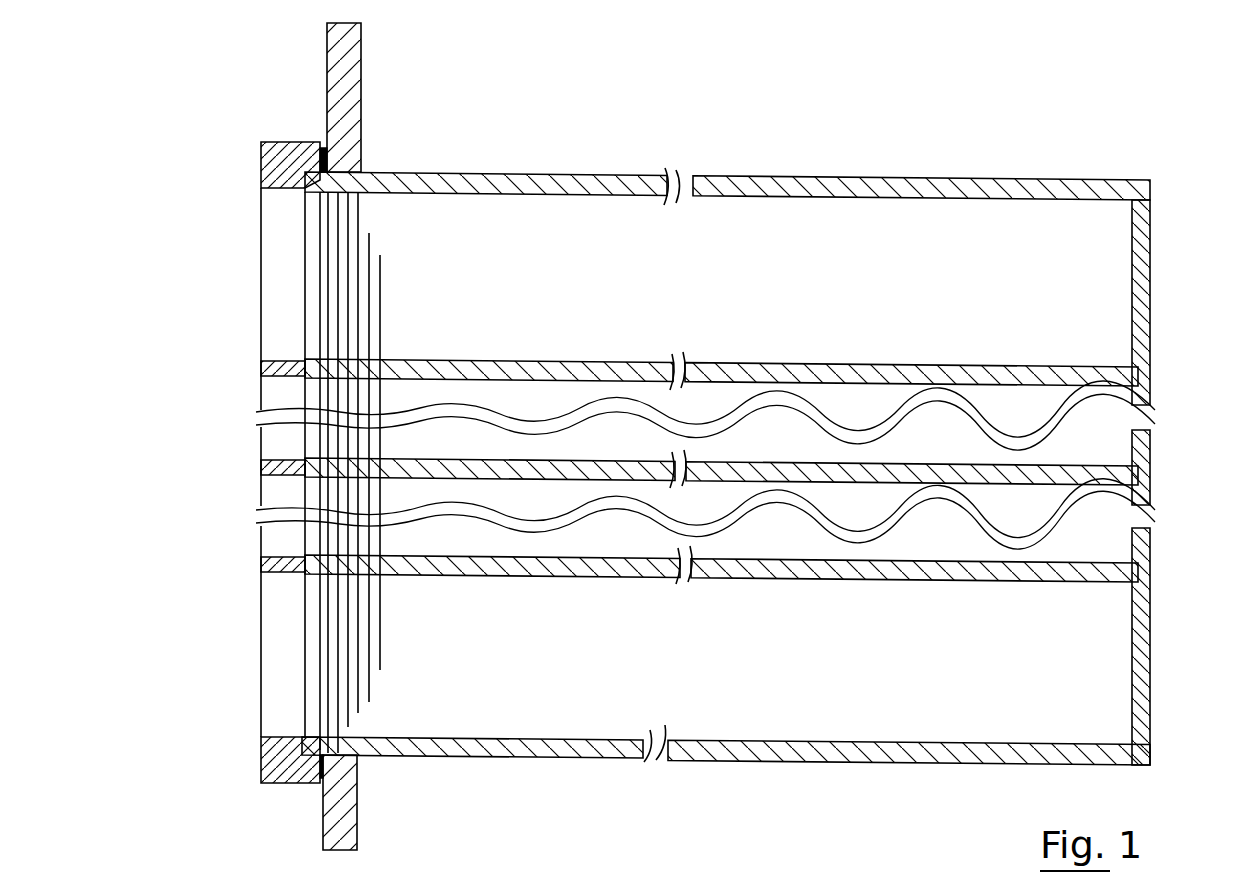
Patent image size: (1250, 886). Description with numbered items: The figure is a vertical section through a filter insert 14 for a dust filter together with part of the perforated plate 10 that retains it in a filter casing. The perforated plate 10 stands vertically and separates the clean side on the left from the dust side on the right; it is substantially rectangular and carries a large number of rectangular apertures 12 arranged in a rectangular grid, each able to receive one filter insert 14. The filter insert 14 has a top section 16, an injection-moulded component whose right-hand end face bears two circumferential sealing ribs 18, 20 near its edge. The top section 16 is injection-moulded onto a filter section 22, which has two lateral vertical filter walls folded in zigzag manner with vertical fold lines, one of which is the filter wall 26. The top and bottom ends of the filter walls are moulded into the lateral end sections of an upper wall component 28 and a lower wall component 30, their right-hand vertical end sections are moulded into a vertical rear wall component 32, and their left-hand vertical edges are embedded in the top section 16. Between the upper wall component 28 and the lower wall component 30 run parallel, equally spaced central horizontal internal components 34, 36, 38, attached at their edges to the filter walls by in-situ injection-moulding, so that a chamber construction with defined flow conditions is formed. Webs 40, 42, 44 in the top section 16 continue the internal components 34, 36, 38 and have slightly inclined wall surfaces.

The perforated plate 10 is at (352, 78).
The rectangular apertures 12 is at (378, 200).
The filter insert 14 is at (254, 431).
The top section 16 is at (280, 661).
The circumferential sealing rib 18 is at (322, 764).
The circumferential sealing rib 20 is at (330, 782).
The filter section 22 is at (767, 427).
The filter wall 26 is at (370, 660).
The upper wall component 28 is at (793, 188).
The lower wall component 30 is at (783, 748).
The rear wall component 32 is at (1140, 655).
The internal component 34 is at (699, 360).
The internal component 36 is at (699, 465).
The internal component 38 is at (698, 567).
The web 40 is at (262, 368).
The web 42 is at (262, 468).
The web 44 is at (262, 568).